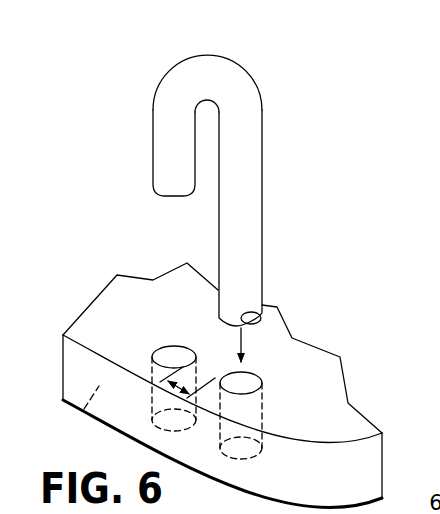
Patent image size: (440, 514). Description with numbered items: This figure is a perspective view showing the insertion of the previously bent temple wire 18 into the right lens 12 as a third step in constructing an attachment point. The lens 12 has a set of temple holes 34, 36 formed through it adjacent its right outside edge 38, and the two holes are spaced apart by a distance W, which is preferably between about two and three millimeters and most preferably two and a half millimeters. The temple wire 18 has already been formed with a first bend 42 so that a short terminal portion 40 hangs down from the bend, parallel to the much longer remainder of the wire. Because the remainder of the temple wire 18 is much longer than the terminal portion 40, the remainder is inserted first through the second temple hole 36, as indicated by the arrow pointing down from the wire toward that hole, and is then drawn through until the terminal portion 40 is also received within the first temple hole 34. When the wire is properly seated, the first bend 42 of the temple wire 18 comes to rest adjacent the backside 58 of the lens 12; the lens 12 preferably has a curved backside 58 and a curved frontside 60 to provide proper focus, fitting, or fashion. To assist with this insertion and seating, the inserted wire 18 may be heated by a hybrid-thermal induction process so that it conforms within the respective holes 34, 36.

The right lens 12 is at (201, 385).
The right temple wire 18 is at (201, 163).
The first temple hole 34 is at (175, 352).
The second temple hole 36 is at (250, 386).
The right outside edge 38 is at (75, 370).
The terminal portion 40 is at (152, 143).
The first bend 42 is at (203, 55).
The backside 58 is at (95, 330).
The frontside 60 is at (83, 412).
The distance W is at (170, 397).